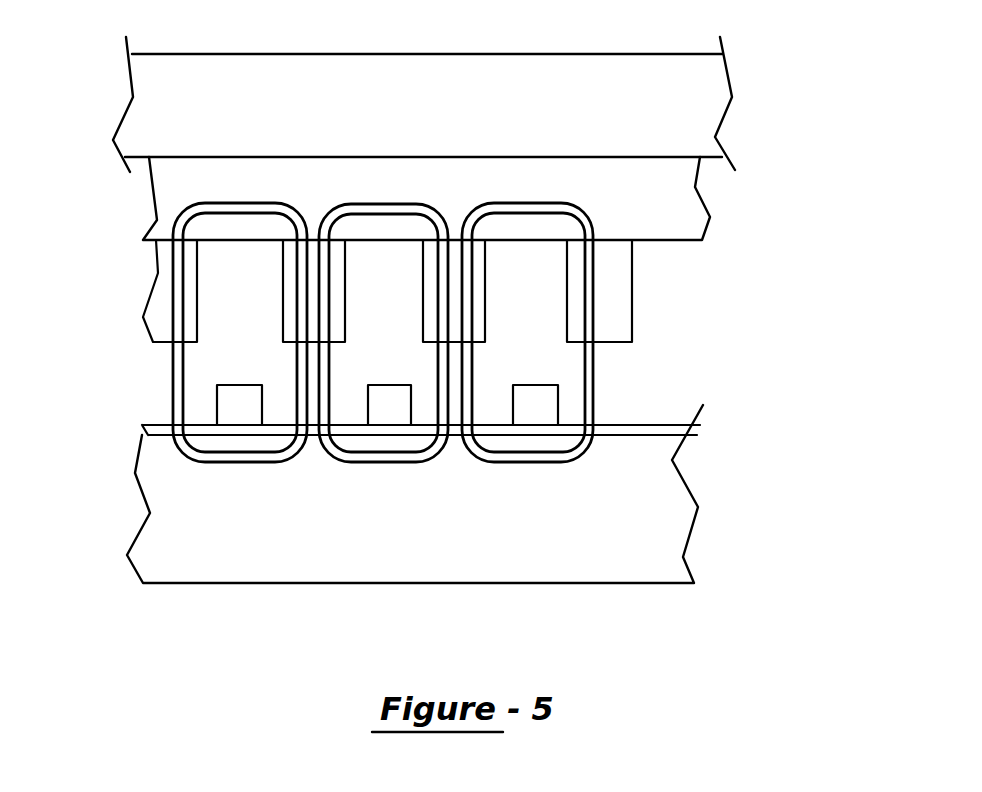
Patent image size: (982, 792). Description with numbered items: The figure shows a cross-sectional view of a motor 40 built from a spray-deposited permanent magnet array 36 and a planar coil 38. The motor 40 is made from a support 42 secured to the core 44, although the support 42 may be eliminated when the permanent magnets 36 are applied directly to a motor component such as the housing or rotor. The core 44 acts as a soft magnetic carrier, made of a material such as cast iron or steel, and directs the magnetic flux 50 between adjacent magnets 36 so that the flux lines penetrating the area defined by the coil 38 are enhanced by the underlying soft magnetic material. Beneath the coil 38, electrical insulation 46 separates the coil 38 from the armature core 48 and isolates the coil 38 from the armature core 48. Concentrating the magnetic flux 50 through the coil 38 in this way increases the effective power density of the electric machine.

The motor 40 is at (813, 118).
The support 42 is at (707, 97).
The core 44 is at (673, 197).
The permanent magnet array 36 is at (622, 298).
The planar coil 38 is at (557, 400).
The magnetic flux 50 is at (617, 408).
The insulator 46 is at (690, 427).
The armature core 48 is at (632, 515).